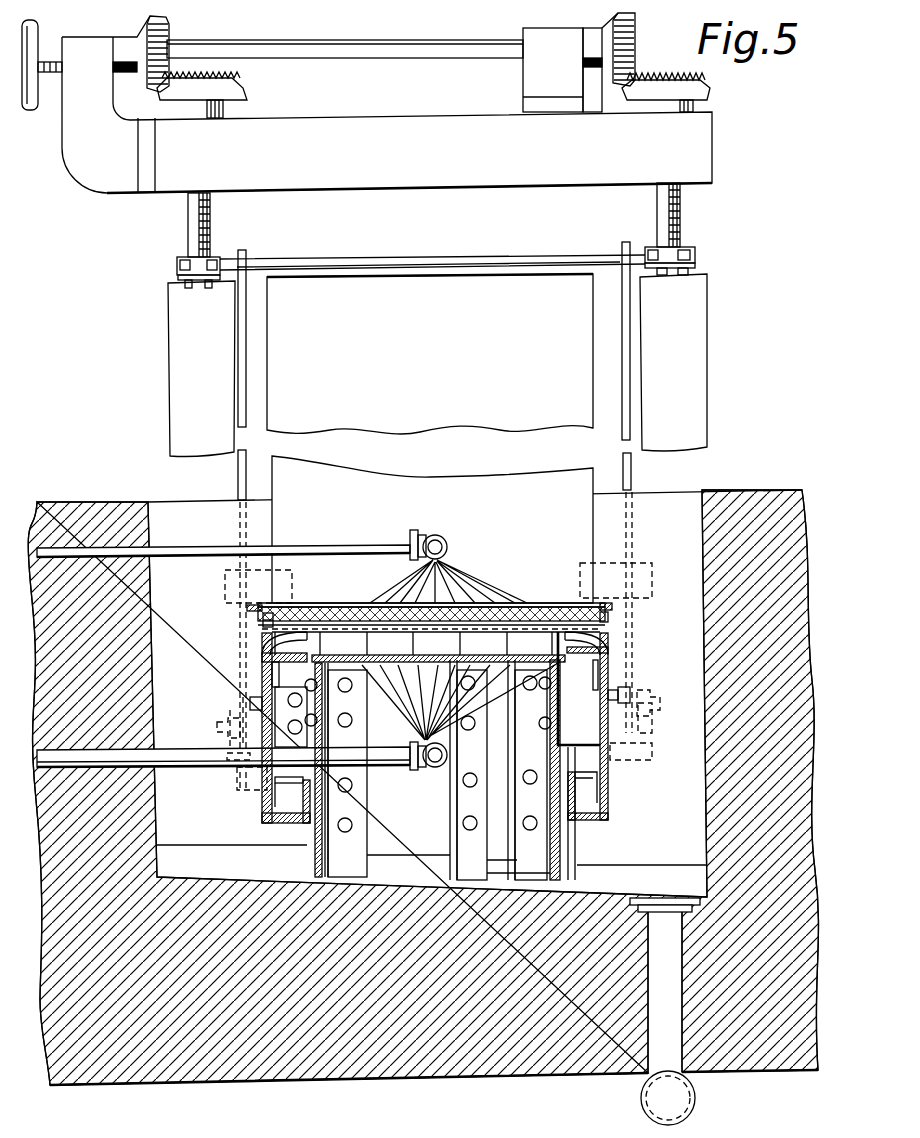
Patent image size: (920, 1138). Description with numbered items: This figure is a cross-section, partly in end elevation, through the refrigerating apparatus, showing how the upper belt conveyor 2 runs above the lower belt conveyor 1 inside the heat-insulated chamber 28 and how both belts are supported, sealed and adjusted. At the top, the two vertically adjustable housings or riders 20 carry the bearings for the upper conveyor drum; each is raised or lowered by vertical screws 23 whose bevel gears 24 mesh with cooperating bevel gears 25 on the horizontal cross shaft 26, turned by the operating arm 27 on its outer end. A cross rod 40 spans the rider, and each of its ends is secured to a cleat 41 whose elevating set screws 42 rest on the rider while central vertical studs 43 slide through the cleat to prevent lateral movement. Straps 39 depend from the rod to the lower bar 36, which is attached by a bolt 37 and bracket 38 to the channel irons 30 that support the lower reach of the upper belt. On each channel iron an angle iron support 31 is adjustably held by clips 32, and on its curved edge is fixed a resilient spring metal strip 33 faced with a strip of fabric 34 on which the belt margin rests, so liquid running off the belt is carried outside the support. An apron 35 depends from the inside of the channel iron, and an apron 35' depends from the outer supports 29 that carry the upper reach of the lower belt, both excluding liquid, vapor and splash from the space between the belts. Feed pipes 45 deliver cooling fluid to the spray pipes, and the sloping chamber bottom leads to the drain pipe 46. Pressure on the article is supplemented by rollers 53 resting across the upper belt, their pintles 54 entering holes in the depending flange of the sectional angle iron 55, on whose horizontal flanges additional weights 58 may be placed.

The lower belt conveyor 1 is at (362, 678).
The upper belt conveyor 2 is at (490, 272).
The vertically adjustable housing or rider 20 is at (167, 366).
The vertical screw 23 is at (190, 218).
The bevel gear 24 is at (247, 92).
The cooperating bevel gear 25 is at (140, 75).
The horizontal cross shaft 26 is at (395, 59).
The operating arm 27 is at (32, 110).
The chamber 28 is at (163, 502).
The support for lower conveyor 29 is at (517, 668).
The channel iron 30 is at (268, 823).
The angle iron support 31 is at (583, 642).
The clip 32 is at (260, 663).
The resilient or spring metal strip 33 is at (572, 618).
The strip of fabric 34 is at (283, 640).
The apron 35 is at (469, 770).
The apron 35' is at (450, 774).
The lower bar 36 is at (240, 768).
The bolt 37 is at (218, 726).
The bracket 38 is at (230, 710).
The strap 39 is at (247, 345).
The cross rod 40 is at (423, 262).
The cleat 41 is at (200, 255).
The elevating set screw 42 is at (177, 267).
The central vertical stud 43 is at (215, 260).
The feed pipe 45 is at (193, 545).
The drain pipe 46 is at (641, 1098).
The roller 53 is at (382, 603).
The pintle 54 is at (263, 620).
The angle iron 55 is at (252, 603).
The additional weight 58 is at (652, 590).